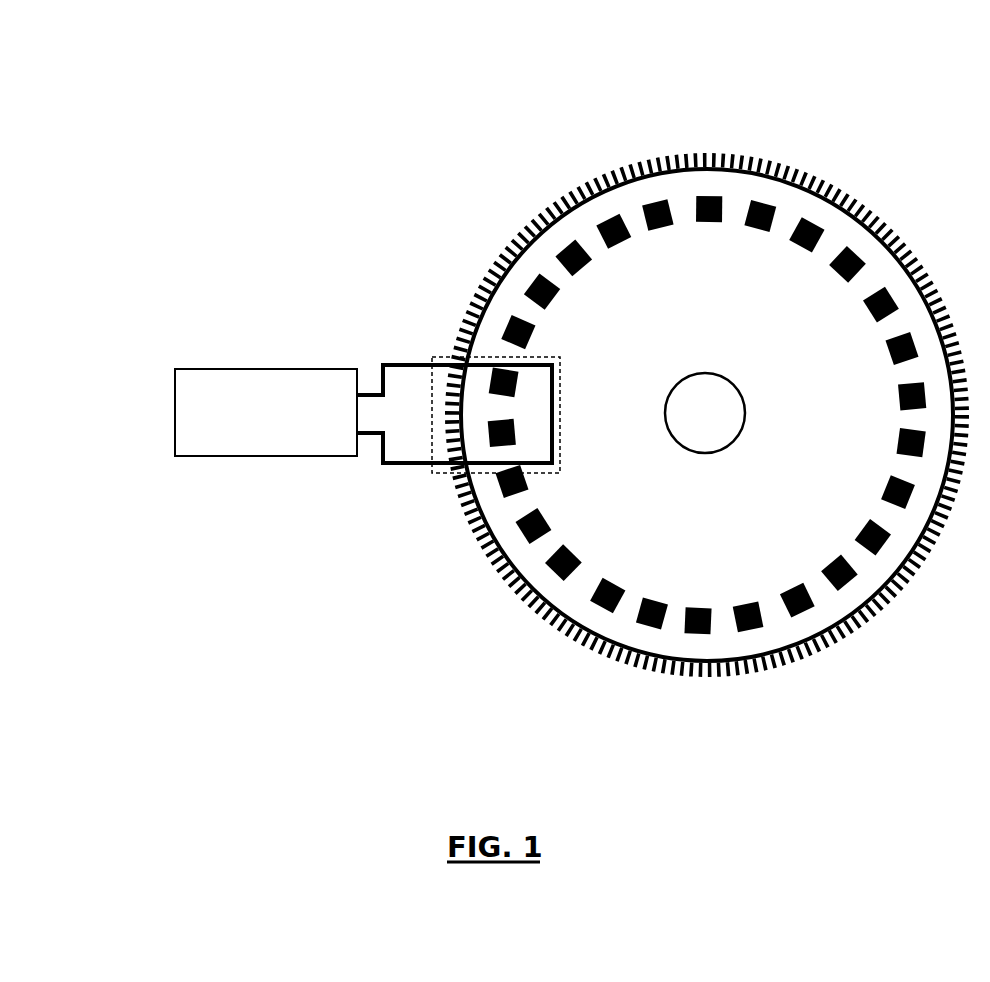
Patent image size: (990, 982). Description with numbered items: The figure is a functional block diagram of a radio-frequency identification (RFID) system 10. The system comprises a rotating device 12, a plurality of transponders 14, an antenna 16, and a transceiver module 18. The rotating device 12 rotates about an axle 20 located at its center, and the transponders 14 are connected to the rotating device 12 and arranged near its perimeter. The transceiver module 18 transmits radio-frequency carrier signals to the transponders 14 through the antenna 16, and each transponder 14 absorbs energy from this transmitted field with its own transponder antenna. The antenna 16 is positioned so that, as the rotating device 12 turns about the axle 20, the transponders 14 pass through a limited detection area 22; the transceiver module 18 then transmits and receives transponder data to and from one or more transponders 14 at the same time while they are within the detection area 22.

The radio-frequency identification (RFID) system 10 is at (216, 69).
The rotating device 12 is at (843, 168).
The transponders 14 is at (545, 337).
The antenna 16 is at (386, 365).
The transceiver module 18 is at (262, 368).
The axle 20 is at (738, 437).
The detection area 22 is at (561, 401).